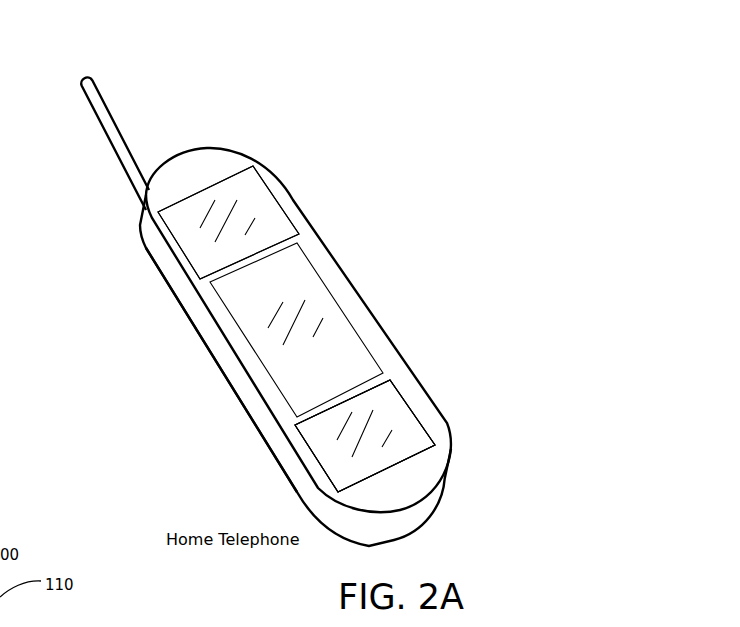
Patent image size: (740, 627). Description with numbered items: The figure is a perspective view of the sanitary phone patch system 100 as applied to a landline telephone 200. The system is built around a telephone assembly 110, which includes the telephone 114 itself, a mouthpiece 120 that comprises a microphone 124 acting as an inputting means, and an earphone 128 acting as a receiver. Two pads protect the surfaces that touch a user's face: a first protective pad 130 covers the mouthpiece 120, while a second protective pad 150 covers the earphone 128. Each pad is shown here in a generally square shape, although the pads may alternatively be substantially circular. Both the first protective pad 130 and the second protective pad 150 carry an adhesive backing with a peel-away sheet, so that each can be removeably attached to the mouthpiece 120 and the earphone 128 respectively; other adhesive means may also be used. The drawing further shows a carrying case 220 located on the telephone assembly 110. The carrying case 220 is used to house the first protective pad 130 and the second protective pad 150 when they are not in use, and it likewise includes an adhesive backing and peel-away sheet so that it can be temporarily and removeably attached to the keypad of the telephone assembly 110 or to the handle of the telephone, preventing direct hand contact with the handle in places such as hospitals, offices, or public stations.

The sanitary phone patch system 100 is at (332, 112).
The telephone assembly 110 is at (212, 87).
The telephone 114 is at (153, 270).
The mouthpiece 120 is at (403, 418).
The microphone 124 is at (337, 460).
The earphone 128 is at (245, 190).
The first protective pad 130 is at (417, 443).
The second protective pad 150 is at (265, 220).
The landline telephone 200 is at (200, 338).
The carrying case 220 is at (333, 310).